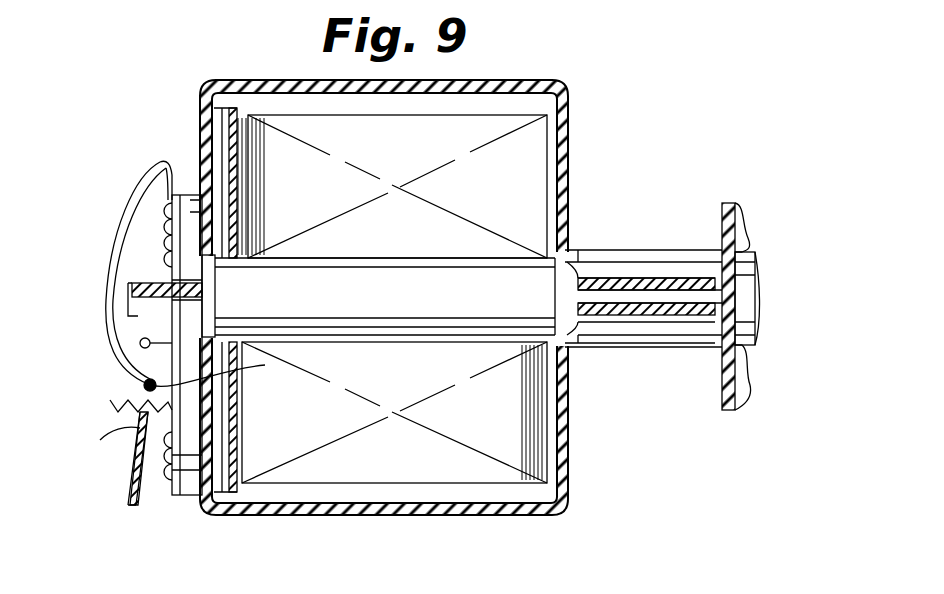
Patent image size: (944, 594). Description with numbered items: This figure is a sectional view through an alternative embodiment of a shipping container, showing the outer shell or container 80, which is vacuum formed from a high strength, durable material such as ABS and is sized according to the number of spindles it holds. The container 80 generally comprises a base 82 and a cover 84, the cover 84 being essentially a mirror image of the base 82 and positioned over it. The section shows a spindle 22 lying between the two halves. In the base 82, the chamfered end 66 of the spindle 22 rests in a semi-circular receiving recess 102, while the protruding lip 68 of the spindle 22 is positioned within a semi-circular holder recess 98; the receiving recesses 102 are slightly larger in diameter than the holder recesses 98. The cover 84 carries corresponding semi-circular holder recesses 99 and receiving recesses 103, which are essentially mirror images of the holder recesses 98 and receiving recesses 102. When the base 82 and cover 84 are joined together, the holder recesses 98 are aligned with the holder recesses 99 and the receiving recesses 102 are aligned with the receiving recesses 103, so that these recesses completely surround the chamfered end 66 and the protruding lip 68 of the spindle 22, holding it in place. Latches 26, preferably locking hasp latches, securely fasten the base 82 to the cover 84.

The cover 84 is at (508, 80).
The base 82 is at (557, 514).
The outer shell or container 80 is at (594, 149).
The chamfered end 66 is at (583, 297).
The receiving recesses 103 is at (578, 262).
The receiving recesses 102 is at (565, 350).
The spindle 22 is at (752, 342).
The latches 26 is at (116, 420).
The holder recesses 99 is at (183, 205).
The protruding lip 68 is at (130, 320).
The holder recesses 98 is at (143, 385).